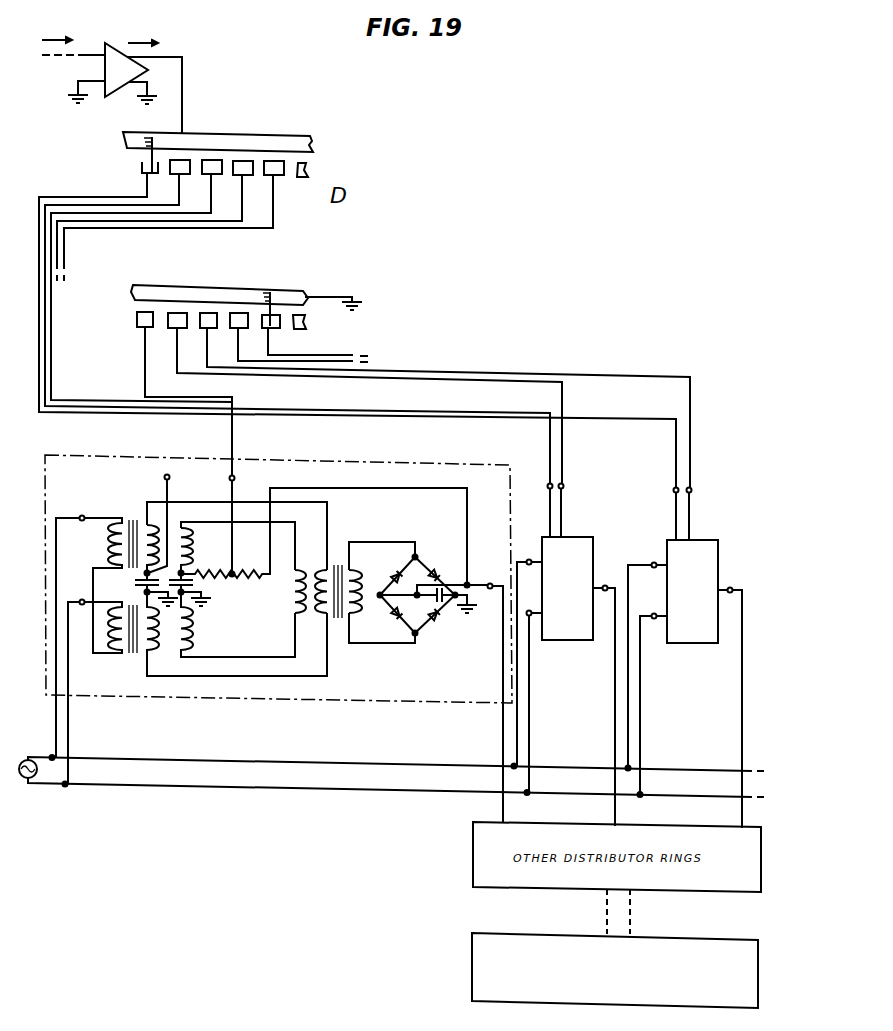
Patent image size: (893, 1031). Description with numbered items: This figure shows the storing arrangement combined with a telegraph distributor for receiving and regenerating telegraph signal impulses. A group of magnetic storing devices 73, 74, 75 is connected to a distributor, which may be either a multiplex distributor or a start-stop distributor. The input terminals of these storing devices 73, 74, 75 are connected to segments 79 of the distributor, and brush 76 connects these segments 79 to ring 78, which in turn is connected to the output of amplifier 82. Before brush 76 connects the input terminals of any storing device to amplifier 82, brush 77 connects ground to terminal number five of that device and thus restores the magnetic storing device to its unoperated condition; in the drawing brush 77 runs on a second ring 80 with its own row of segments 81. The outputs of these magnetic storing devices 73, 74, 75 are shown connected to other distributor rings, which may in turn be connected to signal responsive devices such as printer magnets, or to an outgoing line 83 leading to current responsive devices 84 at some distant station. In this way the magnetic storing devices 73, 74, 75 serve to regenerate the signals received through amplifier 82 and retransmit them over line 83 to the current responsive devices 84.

The amplifier 82 is at (113, 45).
The ring 78 is at (285, 143).
The brush 76 is at (160, 145).
The segments 79 is at (246, 160).
The distributor ring 80 is at (218, 296).
The brush 77 is at (274, 308).
The contact segments 81 is at (200, 325).
The storing device 73 is at (388, 468).
The storing device 74 is at (578, 537).
The storing device 75 is at (700, 540).
The outgoing line 83 is at (604, 899).
The current responsive devices 84 is at (472, 968).